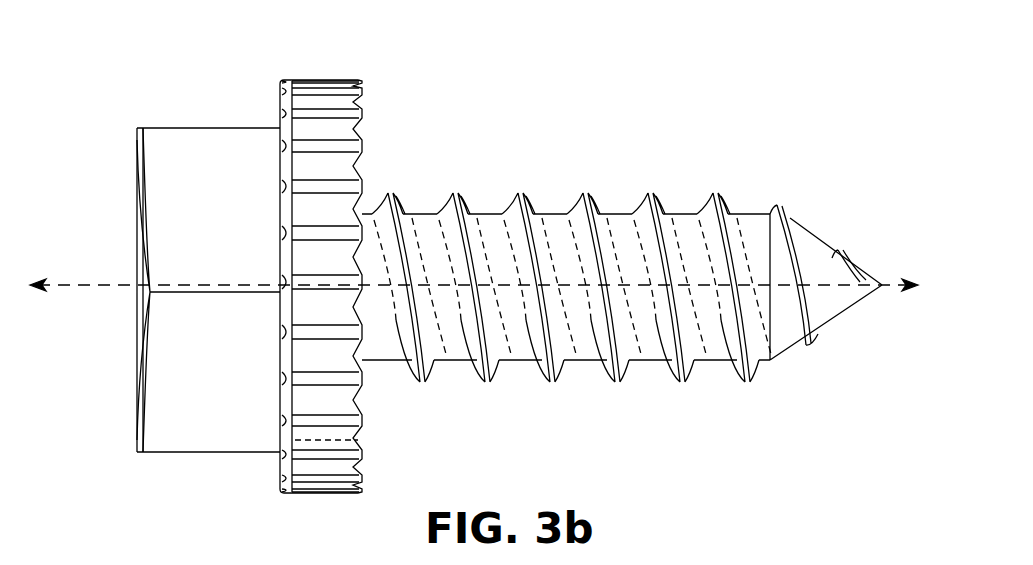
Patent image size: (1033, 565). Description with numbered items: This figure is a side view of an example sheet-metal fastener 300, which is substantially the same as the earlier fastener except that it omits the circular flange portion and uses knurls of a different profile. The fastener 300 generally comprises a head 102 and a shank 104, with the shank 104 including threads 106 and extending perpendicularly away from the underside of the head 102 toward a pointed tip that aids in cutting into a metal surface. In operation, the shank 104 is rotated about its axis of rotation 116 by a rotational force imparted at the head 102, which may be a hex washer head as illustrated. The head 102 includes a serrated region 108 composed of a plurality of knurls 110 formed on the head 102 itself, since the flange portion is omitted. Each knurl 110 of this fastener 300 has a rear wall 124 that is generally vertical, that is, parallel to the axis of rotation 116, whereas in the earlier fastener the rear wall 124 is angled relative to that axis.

The sheet-metal fastener 300 is at (692, 122).
The head 102 is at (195, 128).
The shank 104 is at (485, 214).
The threads 106 is at (580, 195).
The serrated region 108 is at (262, 56).
The knurls 110 is at (362, 131).
The axis of rotation 116 is at (85, 285).
The rear wall 124 is at (360, 440).